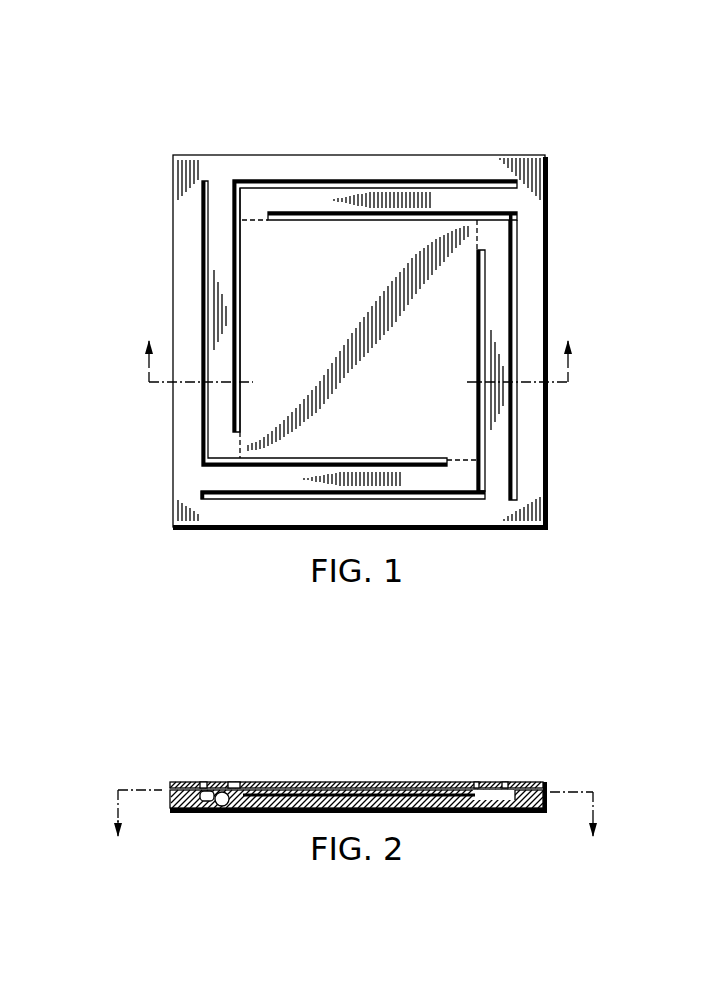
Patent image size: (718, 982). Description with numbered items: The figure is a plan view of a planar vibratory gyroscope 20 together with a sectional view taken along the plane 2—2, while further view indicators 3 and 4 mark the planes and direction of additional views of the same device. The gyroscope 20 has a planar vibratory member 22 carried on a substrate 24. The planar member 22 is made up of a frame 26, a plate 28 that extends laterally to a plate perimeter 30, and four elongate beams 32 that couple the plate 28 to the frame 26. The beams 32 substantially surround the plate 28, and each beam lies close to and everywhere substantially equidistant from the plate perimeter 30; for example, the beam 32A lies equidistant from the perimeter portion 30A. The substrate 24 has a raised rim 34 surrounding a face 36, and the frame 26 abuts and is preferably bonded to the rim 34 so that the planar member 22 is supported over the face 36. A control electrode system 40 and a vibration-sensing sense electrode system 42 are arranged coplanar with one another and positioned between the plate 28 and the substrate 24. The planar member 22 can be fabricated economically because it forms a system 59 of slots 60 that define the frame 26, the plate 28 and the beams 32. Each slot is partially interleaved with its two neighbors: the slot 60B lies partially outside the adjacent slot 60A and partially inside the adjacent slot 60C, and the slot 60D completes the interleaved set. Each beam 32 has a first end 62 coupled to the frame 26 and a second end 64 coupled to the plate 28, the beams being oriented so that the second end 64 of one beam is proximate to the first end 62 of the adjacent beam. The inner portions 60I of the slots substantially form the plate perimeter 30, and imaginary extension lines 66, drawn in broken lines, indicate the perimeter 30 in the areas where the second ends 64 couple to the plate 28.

In FIG. 1, the planar vibratory gyroscope 20 is at (551, 162).
In FIG. 2, the planar vibratory gyroscope 20 is at (554, 777).
In FIG. 1, the planar vibratory member 22 is at (474, 163).
In FIG. 2, the planar vibratory member 22 is at (529, 777).
In FIG. 2, the substrate 24 is at (547, 818).
In FIG. 1, the frame 26 is at (520, 480).
In FIG. 2, the frame 26 is at (180, 782).
In FIG. 1, the plate 28 is at (437, 240).
In FIG. 2, the plate 28 is at (375, 782).
In FIG. 1, the plate perimeter 30 is at (478, 268).
In FIG. 1, the perimeter portion 30A is at (232, 347).
In FIG. 1, the elongate beams 32 is at (510, 287).
In FIG. 2, the elongate beams 32 is at (488, 782).
In FIG. 1, the elongate beam 32A is at (233, 303).
In FIG. 2, the raised rim 34 is at (213, 790).
In FIG. 2, the face 36 is at (228, 807).
In FIG. 2, the control electrode system 40 is at (507, 797).
In FIG. 2, the sense electrode system 42 is at (478, 797).
In FIG. 1, the system of slots 59 is at (200, 268).
In FIG. 2, the slot 60 is at (510, 782).
In FIG. 1, the slot 60A is at (518, 430).
In FIG. 1, the slot 60B is at (247, 180).
In FIG. 1, the slot 60C is at (202, 213).
In FIG. 1, the slot 60D is at (203, 490).
In FIG. 1, the inner portions of slots 60I is at (303, 218).
In FIG. 1, the first end of beam 62 is at (505, 522).
In FIG. 1, the second end of beam 64 is at (462, 477).
In FIG. 1, the imaginary extension lines 66 is at (253, 222).
In FIG. 1, the plane 2— 2 is at (359, 345).
In FIG. 2, the plane 3— 3 is at (355, 829).
In FIG. 2, the view 4 indicator 4 is at (287, 793).